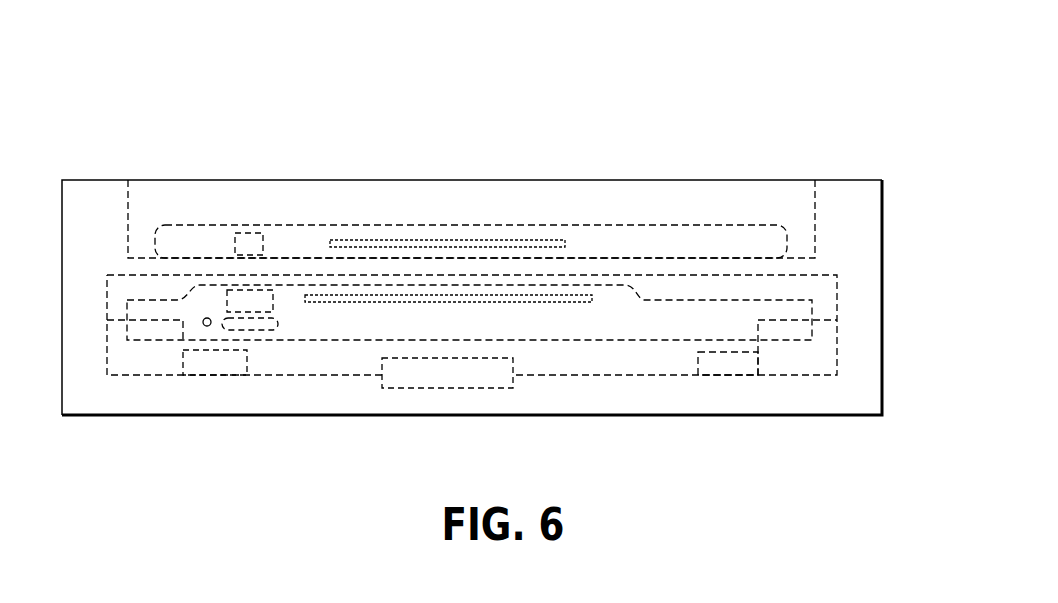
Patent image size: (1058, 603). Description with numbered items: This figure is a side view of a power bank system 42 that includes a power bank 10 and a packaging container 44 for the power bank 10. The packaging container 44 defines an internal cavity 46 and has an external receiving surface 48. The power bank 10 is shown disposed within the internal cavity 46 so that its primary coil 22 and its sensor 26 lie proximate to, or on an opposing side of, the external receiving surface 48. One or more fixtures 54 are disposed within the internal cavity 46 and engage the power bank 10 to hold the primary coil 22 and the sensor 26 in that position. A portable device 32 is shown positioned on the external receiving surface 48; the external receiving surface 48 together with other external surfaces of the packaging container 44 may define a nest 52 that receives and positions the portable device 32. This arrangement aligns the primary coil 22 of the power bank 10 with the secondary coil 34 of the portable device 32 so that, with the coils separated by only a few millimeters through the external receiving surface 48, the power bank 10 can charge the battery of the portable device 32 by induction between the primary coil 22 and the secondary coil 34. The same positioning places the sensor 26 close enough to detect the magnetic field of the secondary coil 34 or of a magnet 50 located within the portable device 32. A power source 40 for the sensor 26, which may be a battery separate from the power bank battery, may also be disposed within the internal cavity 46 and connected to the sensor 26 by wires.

The power bank 10 is at (793, 296).
The primary coil 22 is at (522, 300).
The sensor 26 is at (213, 300).
The portable device 32 is at (286, 221).
The secondary coil 34 is at (494, 238).
The power source 40 is at (445, 378).
The power bank system 42 is at (649, 101).
The packaging container 44 is at (884, 356).
The internal cavity 46 is at (327, 357).
The external receiving surface 48 is at (800, 262).
The magnet 50 is at (250, 233).
The nest 52 is at (626, 204).
The fixtures 54 is at (145, 357).